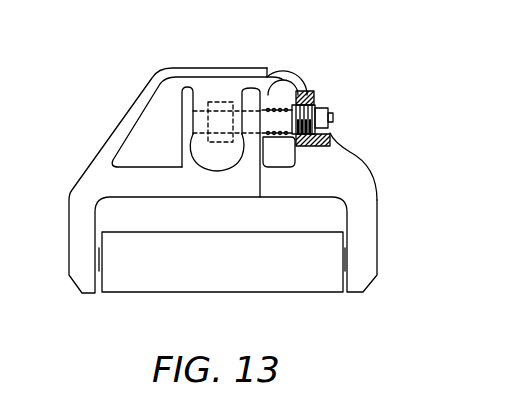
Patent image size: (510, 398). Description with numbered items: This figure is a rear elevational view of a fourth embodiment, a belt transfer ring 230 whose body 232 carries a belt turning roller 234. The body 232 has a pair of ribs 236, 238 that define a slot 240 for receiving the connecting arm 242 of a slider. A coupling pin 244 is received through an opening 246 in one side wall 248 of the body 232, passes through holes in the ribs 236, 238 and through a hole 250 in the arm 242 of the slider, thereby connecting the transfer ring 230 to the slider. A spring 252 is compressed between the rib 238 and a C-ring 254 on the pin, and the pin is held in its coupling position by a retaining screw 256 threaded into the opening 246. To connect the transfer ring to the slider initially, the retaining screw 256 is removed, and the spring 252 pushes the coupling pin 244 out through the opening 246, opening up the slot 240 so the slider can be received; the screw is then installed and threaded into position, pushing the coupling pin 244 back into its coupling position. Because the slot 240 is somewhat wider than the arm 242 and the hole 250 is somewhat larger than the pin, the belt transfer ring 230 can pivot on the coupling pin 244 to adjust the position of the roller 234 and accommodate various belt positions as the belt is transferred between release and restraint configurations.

The belt transfer ring 230 is at (97, 147).
The body 232 is at (160, 72).
The belt turning roller 234 is at (330, 285).
The rib 236 is at (182, 137).
The rib 238 is at (279, 80).
The slot 240 is at (246, 146).
The connecting arm 242 is at (226, 93).
The coupling pin 244 is at (260, 192).
The opening 246 is at (332, 127).
The side wall 248 is at (299, 92).
The hole 250 is at (210, 105).
The spring 252 is at (308, 95).
The C-ring 254 is at (279, 168).
The retaining screw 256 is at (329, 108).